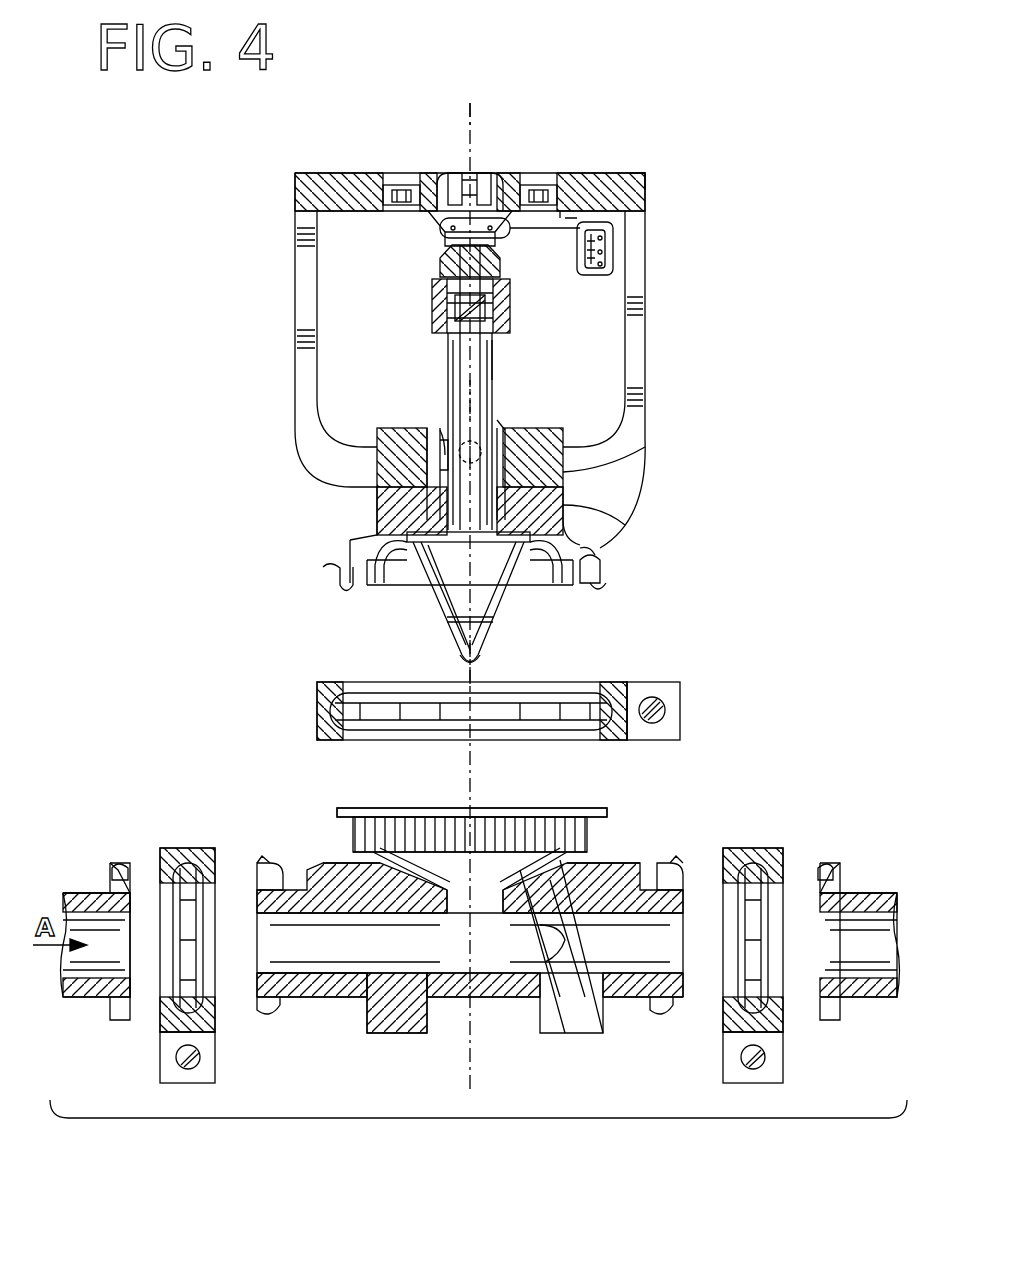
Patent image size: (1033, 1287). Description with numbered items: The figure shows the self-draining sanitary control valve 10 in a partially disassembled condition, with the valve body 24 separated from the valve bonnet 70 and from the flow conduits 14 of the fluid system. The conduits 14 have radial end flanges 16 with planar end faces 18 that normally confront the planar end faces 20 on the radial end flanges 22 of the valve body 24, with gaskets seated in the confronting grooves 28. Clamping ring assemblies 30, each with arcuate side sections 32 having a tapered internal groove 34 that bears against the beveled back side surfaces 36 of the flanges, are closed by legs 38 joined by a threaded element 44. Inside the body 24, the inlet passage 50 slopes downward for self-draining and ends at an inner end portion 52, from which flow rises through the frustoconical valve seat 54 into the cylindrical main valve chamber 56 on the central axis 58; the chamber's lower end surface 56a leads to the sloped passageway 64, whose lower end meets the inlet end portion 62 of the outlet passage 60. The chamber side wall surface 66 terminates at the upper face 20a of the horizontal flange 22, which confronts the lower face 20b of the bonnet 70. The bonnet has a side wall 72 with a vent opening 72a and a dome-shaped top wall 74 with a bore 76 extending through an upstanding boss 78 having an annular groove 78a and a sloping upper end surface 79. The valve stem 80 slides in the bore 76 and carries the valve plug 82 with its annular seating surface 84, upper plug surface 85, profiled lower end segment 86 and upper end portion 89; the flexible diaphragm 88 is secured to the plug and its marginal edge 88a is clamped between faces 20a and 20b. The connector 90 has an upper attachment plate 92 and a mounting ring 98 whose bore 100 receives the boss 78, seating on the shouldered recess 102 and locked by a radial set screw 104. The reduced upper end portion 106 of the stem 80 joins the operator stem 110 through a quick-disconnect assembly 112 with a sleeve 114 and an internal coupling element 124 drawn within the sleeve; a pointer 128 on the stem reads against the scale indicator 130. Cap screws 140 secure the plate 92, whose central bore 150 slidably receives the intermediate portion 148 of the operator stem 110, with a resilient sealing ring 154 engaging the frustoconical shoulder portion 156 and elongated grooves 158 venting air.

The self-draining sanitary control valve 10 is at (490, 1174).
The flow conduits 14 is at (80, 1000).
The radial end flanges 16 is at (118, 1010).
The planar end faces 18 is at (128, 868).
The planar end faces 20 is at (325, 580).
The upwardly facing end face 20a is at (392, 808).
The lower end face 20b is at (608, 585).
The radial end flanges 22 is at (605, 565).
The valve body 24 is at (432, 1010).
The grooves 28 is at (120, 865).
The clamping ring assembly 30 is at (690, 688).
The arcuate side sections 32 is at (520, 682).
The tapered arcuate internal groove 34 is at (357, 700).
The beveled back side surfaces 36 is at (600, 555).
The outwardly extending leg 38 is at (660, 688).
The threaded element 44 is at (665, 712).
The inlet passage 50 is at (305, 968).
The inner end portion 52 is at (480, 985).
The valve seat 54 is at (495, 880).
The main valve chamber 56 is at (425, 880).
The lower end surface 56a is at (455, 905).
The central axis 58 is at (482, 122).
The outlet passage 60 is at (583, 1020).
The inlet end portion 62 is at (550, 1020).
The sloped passageway 64 is at (590, 945).
The upstanding side wall surface 66 is at (483, 812).
The valve bonnet 70 is at (568, 496).
The side wall 72 is at (370, 545).
The vent opening 72a is at (585, 545).
The top wall 74 is at (395, 455).
The bore 76 is at (498, 400).
The upstanding boss 78 is at (440, 420).
The annular groove 78a is at (520, 425).
The frustoconical upper end surface 79 is at (505, 415).
The valve stem 80 is at (494, 352).
The valve plug 82 is at (480, 583).
The annular seating surface 84 is at (460, 630).
The frustoconical valve plug surface 85 is at (445, 580).
The profiled lower end segment 86 is at (462, 645).
The flexible valve diaphragm 88 is at (377, 505).
The marginal annular outer edge portion 88a is at (355, 585).
The upper end portion 89 is at (580, 525).
The connector 90 is at (648, 340).
The upper attachment plate 92 is at (640, 183).
The circular mounting ring 98 is at (548, 440).
The bore 100 is at (435, 420).
The shouldered recess 102 is at (600, 462).
The radial set screw 104 is at (462, 395).
The upper end portion 106 is at (455, 345).
The operator stem 110 is at (438, 262).
The quick-disconnect assembly 112 is at (510, 297).
The sleeve 114 is at (447, 300).
The spring element 124 is at (500, 320).
The pointer 128 is at (512, 238).
The scale indicator 130 is at (613, 244).
The cap screws 140 is at (385, 205).
The intermediate main body portion 148 is at (462, 175).
The central bore 150 is at (480, 175).
The resilient sealing ring 154 is at (432, 175).
The frustoconical shoulder portion 156 is at (440, 225).
The elongated grooves 158 is at (447, 175).